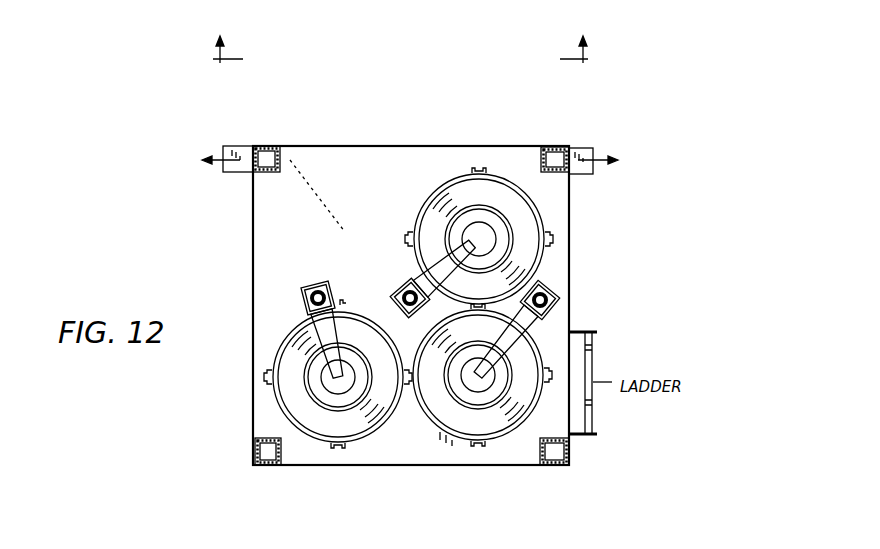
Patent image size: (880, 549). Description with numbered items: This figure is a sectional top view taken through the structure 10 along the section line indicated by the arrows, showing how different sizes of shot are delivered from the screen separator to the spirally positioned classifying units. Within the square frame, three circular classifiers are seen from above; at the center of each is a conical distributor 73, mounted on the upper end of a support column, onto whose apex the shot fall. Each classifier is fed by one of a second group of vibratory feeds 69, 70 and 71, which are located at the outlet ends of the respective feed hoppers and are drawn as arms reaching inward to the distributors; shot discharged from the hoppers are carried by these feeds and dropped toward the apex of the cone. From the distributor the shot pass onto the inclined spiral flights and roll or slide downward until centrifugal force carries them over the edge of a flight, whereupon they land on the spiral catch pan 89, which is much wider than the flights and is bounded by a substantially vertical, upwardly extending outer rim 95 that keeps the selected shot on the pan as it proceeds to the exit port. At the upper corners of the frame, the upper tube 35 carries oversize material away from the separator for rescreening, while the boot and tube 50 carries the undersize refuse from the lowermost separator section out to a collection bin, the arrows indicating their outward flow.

The structure of FIG. 10 is at (402, 39).
The upper tube 35 is at (232, 172).
The boot and tube 50 is at (588, 174).
The vibratory feed 69 is at (312, 312).
The vibratory feed 70 is at (420, 282).
The vibratory feed 71 is at (523, 324).
The conical distributor 73 is at (484, 257).
The catch pan 89 is at (316, 424).
The outer rim 95 is at (542, 221).